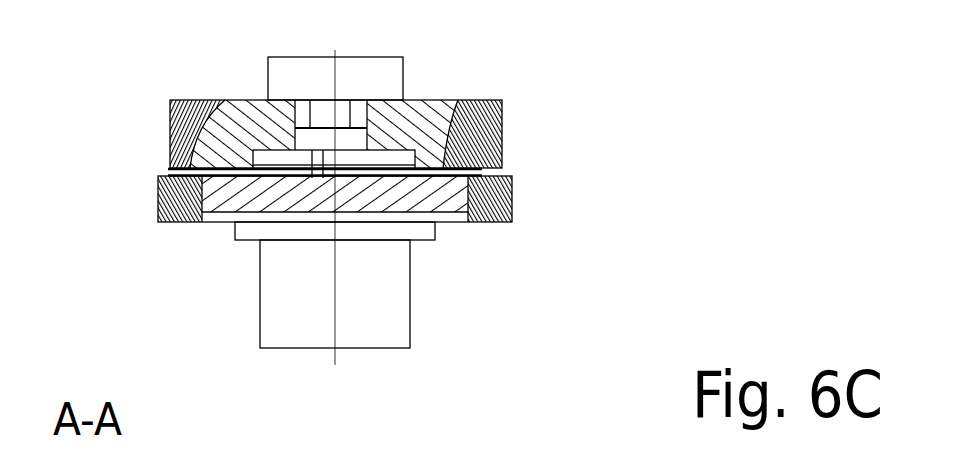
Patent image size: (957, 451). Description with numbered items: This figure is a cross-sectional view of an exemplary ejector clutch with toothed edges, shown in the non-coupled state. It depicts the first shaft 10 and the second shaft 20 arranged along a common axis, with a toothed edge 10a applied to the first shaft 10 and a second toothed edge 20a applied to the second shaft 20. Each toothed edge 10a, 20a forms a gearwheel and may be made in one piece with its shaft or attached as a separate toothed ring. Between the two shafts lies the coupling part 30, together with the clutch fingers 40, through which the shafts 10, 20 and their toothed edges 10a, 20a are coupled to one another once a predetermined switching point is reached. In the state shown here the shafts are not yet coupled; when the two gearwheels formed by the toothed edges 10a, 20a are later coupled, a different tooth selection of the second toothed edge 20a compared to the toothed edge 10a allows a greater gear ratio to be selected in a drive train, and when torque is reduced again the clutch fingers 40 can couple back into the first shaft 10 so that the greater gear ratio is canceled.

The first shaft 10 is at (392, 303).
The toothed edge 10a is at (512, 200).
The second shaft 20 is at (393, 63).
The second toothed edge 20a is at (502, 115).
The coupling part 30 is at (265, 180).
The clutch fingers 40 is at (318, 172).